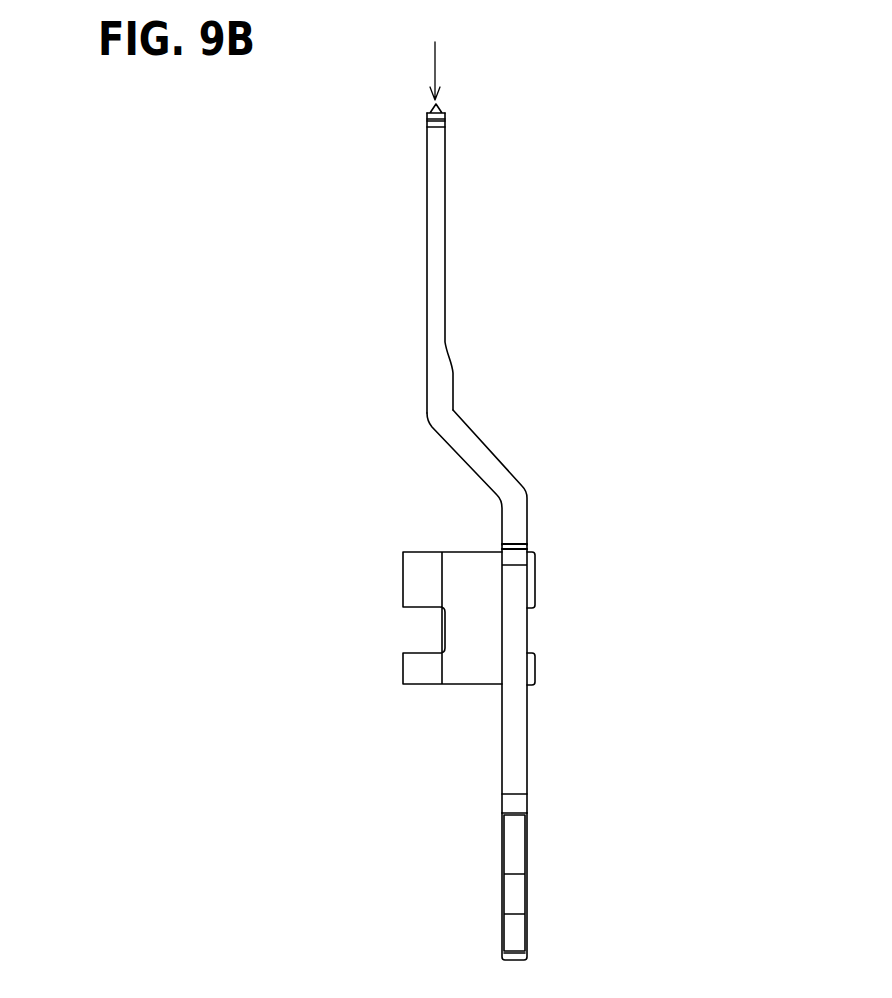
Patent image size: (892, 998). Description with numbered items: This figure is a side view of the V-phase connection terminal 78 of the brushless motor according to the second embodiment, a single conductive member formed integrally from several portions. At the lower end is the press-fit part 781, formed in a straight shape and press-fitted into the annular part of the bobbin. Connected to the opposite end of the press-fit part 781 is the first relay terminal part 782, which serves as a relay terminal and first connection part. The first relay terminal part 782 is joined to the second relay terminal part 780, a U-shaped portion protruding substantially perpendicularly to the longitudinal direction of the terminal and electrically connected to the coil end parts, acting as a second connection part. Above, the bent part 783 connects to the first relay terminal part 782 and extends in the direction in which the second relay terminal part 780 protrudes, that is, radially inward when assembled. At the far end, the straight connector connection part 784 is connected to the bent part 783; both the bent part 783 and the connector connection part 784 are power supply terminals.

The V-phase connection terminal 78 is at (515, 322).
The second relay terminal part 780 is at (420, 577).
The press-fit part 781 is at (516, 840).
The first relay terminal part 782 is at (517, 619).
The bent part 783 is at (483, 448).
The connector connection part 784 is at (434, 186).